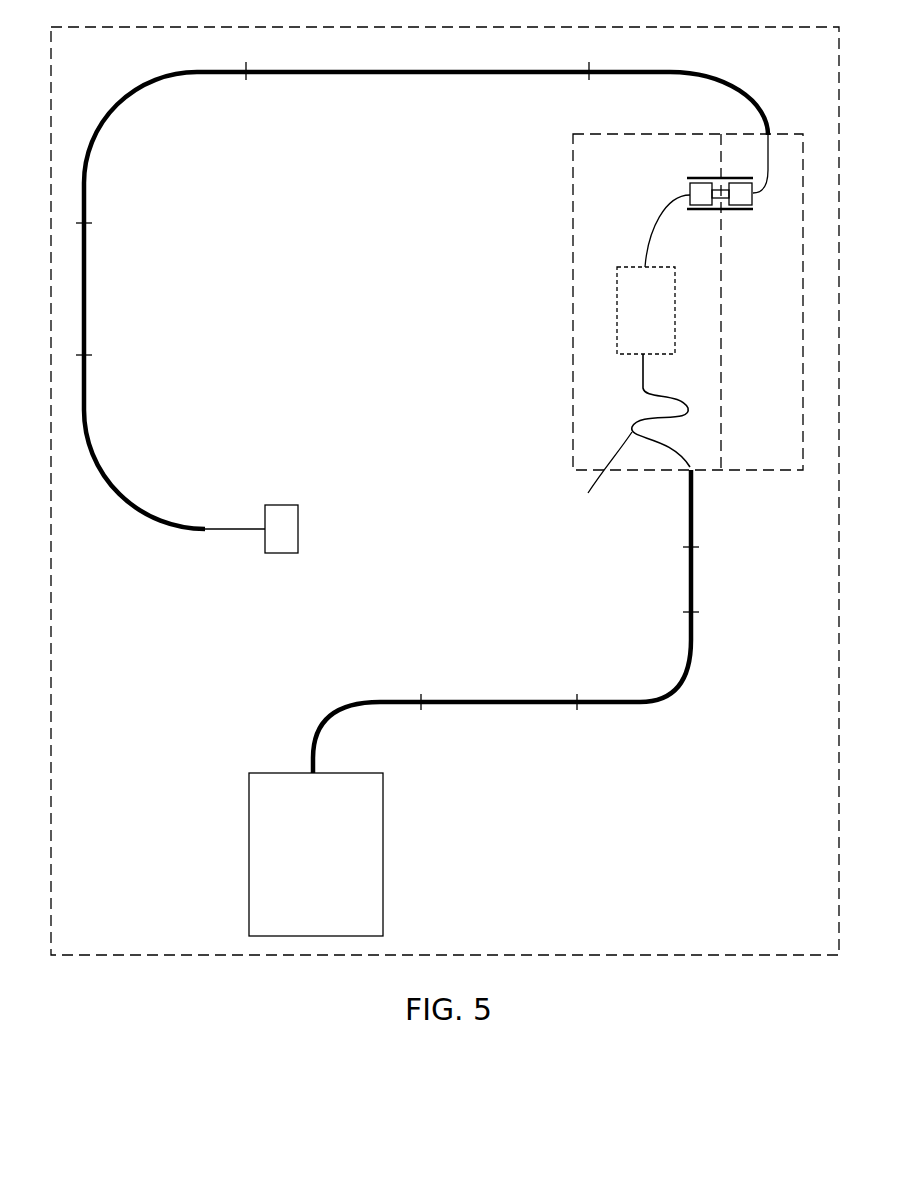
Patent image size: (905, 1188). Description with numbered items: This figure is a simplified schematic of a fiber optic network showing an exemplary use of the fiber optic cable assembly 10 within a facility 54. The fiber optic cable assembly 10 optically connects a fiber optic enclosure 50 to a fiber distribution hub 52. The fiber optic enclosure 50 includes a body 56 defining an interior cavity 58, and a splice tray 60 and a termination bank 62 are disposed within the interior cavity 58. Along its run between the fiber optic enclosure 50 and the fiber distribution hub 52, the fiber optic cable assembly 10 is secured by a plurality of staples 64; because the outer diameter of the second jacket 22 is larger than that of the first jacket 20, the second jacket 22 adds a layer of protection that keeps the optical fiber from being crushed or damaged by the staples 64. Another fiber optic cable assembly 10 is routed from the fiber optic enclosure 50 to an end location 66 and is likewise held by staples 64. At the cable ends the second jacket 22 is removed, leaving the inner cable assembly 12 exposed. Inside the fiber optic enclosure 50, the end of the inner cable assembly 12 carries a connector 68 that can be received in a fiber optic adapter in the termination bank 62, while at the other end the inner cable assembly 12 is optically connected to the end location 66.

The fiber optic cable assembly 10 is at (426, 422).
The inner cable assembly 12 is at (252, 518).
The first jacket 20 is at (243, 530).
The second jacket 22 is at (152, 518).
The fiber optic enclosure 50 is at (639, 284).
The fiber distribution hub 52 is at (383, 857).
The facility 54 is at (670, 957).
The body 56 is at (573, 190).
The interior cavity 58 is at (590, 407).
The splice tray 60 is at (617, 323).
The termination bank 62 is at (731, 172).
The staples 64 is at (246, 80).
The end location 66 is at (298, 520).
The connector 68 is at (753, 200).